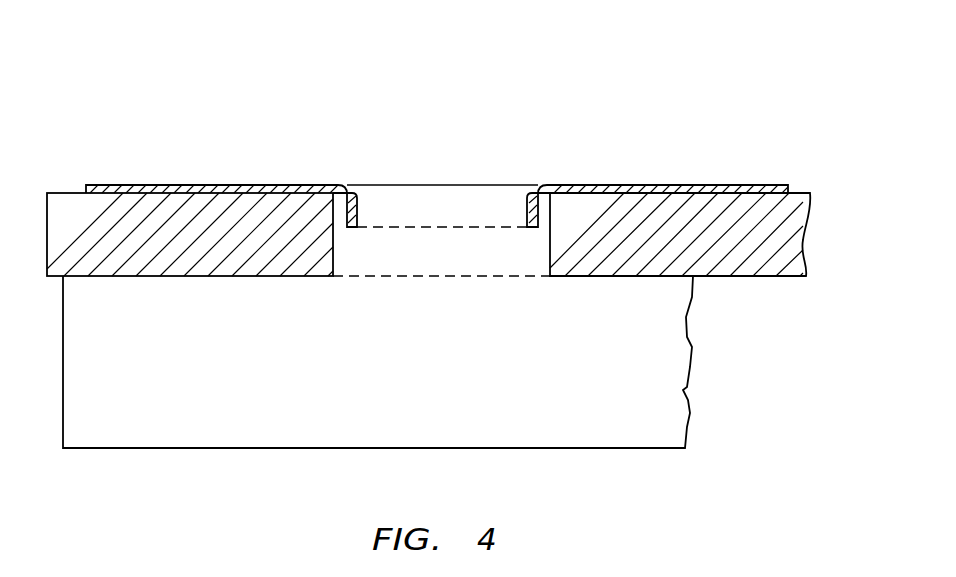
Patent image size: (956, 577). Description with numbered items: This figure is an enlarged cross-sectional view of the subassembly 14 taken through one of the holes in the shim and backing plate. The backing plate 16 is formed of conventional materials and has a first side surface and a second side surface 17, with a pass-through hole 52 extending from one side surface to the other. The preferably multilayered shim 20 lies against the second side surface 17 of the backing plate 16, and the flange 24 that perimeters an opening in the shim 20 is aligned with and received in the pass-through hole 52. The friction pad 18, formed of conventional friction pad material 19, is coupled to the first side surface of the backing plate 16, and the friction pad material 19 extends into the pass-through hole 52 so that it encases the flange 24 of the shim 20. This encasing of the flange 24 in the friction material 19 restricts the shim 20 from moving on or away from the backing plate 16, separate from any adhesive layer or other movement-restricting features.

The subassembly 14 is at (712, 72).
The backing plate 16 is at (740, 277).
The second side surface 17 is at (65, 193).
The friction pad 18 is at (378, 396).
The friction pad material 19 is at (560, 417).
The shim 20 is at (730, 185).
The flange 24 is at (355, 205).
The pass-through hole 52 is at (335, 250).